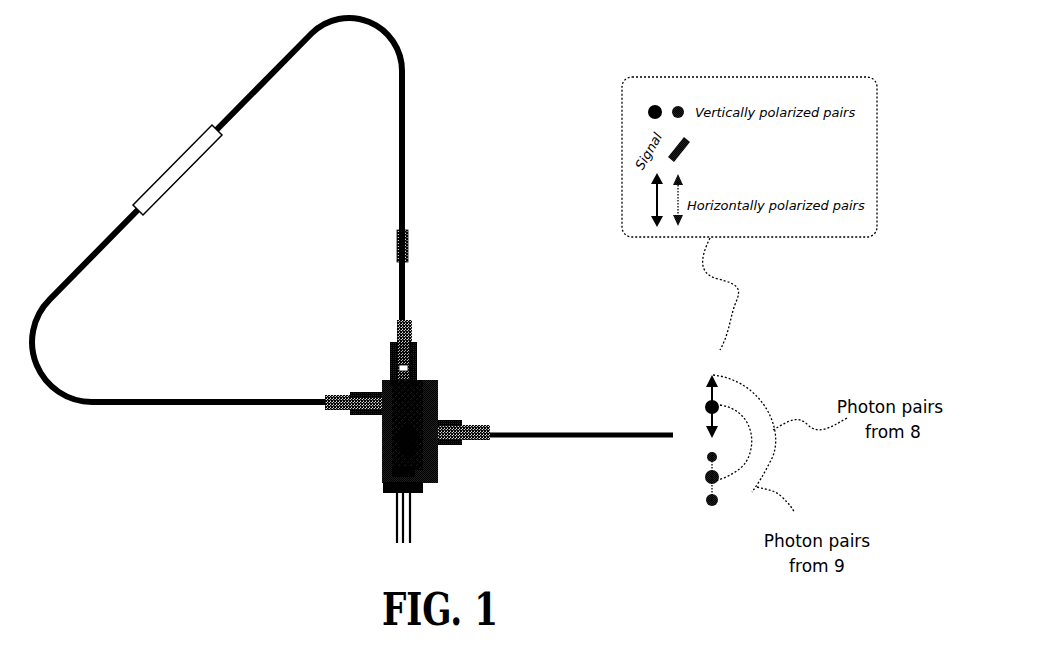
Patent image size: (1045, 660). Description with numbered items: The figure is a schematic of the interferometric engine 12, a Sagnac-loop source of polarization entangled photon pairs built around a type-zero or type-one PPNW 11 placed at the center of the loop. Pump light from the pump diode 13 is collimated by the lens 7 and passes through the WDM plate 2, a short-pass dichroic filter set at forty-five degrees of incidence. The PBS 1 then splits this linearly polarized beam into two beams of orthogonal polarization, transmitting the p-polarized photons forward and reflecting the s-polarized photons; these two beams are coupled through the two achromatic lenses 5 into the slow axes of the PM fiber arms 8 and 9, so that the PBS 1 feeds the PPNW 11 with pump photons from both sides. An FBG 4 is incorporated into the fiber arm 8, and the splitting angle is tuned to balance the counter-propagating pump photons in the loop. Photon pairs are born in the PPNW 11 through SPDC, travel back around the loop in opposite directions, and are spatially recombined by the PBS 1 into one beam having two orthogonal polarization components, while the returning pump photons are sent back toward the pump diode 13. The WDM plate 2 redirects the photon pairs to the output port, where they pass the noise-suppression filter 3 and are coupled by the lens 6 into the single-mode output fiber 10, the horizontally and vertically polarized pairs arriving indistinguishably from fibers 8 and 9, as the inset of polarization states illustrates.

The PBS 1 is at (383, 415).
The WDM plate 2 is at (377, 440).
The output noise-suppression filter 3 is at (430, 373).
The FBG 4 is at (396, 236).
The achromatic lenses 5 is at (380, 380).
The lens 6 is at (443, 417).
The lens 7 is at (373, 463).
The PM fiber arm 8 is at (405, 113).
The PM fiber arm 9 is at (85, 407).
The single-mode output fiber 10 is at (570, 438).
The PPNW 11 is at (188, 173).
The interferometric engine 12 is at (440, 482).
The pump diode 13 is at (392, 500).